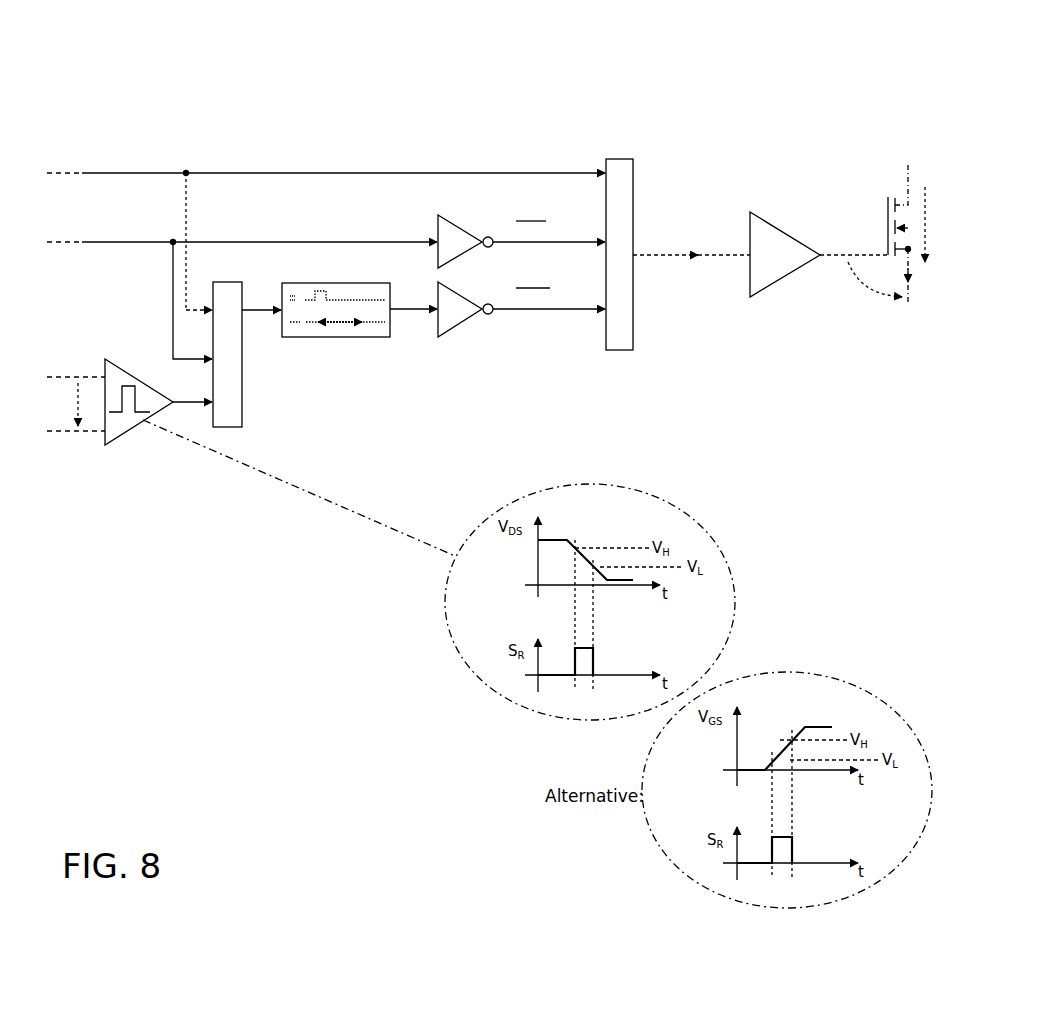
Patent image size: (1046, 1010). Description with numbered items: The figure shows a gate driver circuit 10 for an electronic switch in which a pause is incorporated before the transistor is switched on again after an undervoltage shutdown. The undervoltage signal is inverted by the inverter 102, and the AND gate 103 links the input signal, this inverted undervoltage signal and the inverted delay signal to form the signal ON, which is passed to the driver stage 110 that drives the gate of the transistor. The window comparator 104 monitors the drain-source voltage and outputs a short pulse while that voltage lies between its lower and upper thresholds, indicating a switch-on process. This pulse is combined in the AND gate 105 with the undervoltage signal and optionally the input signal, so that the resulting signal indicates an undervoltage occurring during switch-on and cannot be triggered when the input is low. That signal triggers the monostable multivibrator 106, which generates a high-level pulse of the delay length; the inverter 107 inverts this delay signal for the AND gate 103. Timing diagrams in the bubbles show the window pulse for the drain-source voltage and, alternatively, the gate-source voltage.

The gate driver circuit 10 is at (690, 76).
The inverter 102 is at (456, 218).
The AND gate 103 is at (620, 340).
The window comparator 104 is at (128, 432).
The AND gate 105 is at (232, 418).
The monostable multivibrator 106 is at (330, 337).
The inverter 107 is at (452, 332).
The driver stage 110 is at (778, 240).